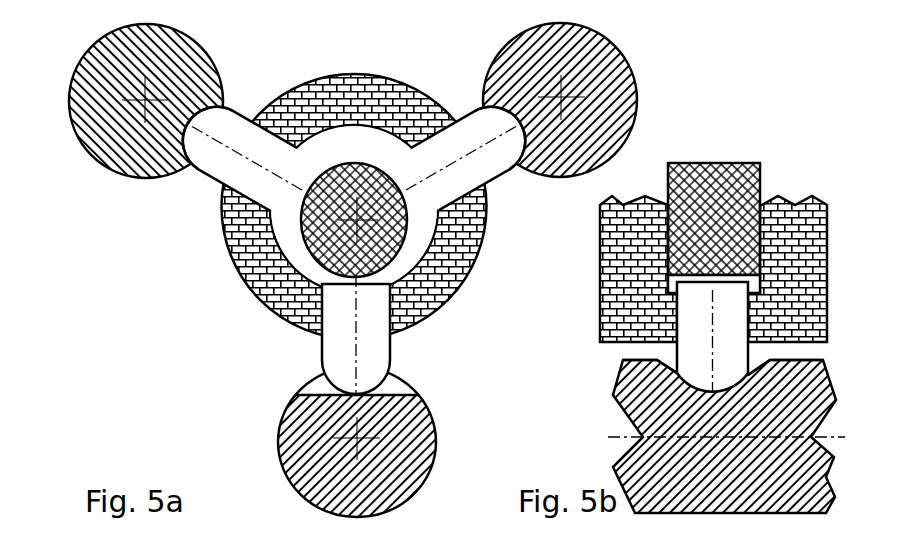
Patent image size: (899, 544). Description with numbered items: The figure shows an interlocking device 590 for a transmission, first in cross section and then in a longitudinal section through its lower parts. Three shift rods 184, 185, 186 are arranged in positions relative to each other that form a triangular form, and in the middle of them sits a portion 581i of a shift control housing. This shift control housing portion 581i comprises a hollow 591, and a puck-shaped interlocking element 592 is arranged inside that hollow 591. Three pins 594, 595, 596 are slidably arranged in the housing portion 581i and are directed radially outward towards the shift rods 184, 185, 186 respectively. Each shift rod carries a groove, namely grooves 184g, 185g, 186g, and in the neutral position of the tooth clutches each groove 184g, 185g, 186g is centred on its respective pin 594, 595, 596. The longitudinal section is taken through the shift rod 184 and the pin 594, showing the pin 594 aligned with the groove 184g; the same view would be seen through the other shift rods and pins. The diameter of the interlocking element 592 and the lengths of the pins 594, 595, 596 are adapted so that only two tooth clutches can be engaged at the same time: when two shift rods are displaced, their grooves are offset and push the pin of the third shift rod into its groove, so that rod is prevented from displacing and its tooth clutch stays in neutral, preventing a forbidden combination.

In FIG. 5a, the shift rod 184 is at (406, 443).
In FIG. 5b, the shift rod 184 is at (641, 436).
In FIG. 5a, the groove 184g is at (421, 405).
In FIG. 5b, the groove 184g is at (651, 393).
In FIG. 5a, the shift rod 185 is at (207, 43).
In FIG. 5a, the groove 185g is at (172, 158).
In FIG. 5a, the shift rod 186 is at (640, 85).
In FIG. 5a, the groove 186g is at (490, 98).
In FIG. 5a, the shift control housing portion 581i is at (473, 278).
In FIG. 5b, the shift control housing portion 581i is at (598, 307).
In FIG. 5a, the interlocking device 590 is at (178, 353).
In FIG. 5a, the hollow 591 is at (414, 254).
In FIG. 5b, the hollow 591 is at (663, 283).
In FIG. 5a, the interlocking element 592 is at (387, 242).
In FIG. 5b, the interlocking element 592 is at (700, 250).
In FIG. 5a, the pin 594 is at (373, 352).
In FIG. 5b, the pin 594 is at (676, 350).
In FIG. 5a, the pin 595 is at (224, 154).
In FIG. 5a, the pin 596 is at (485, 118).